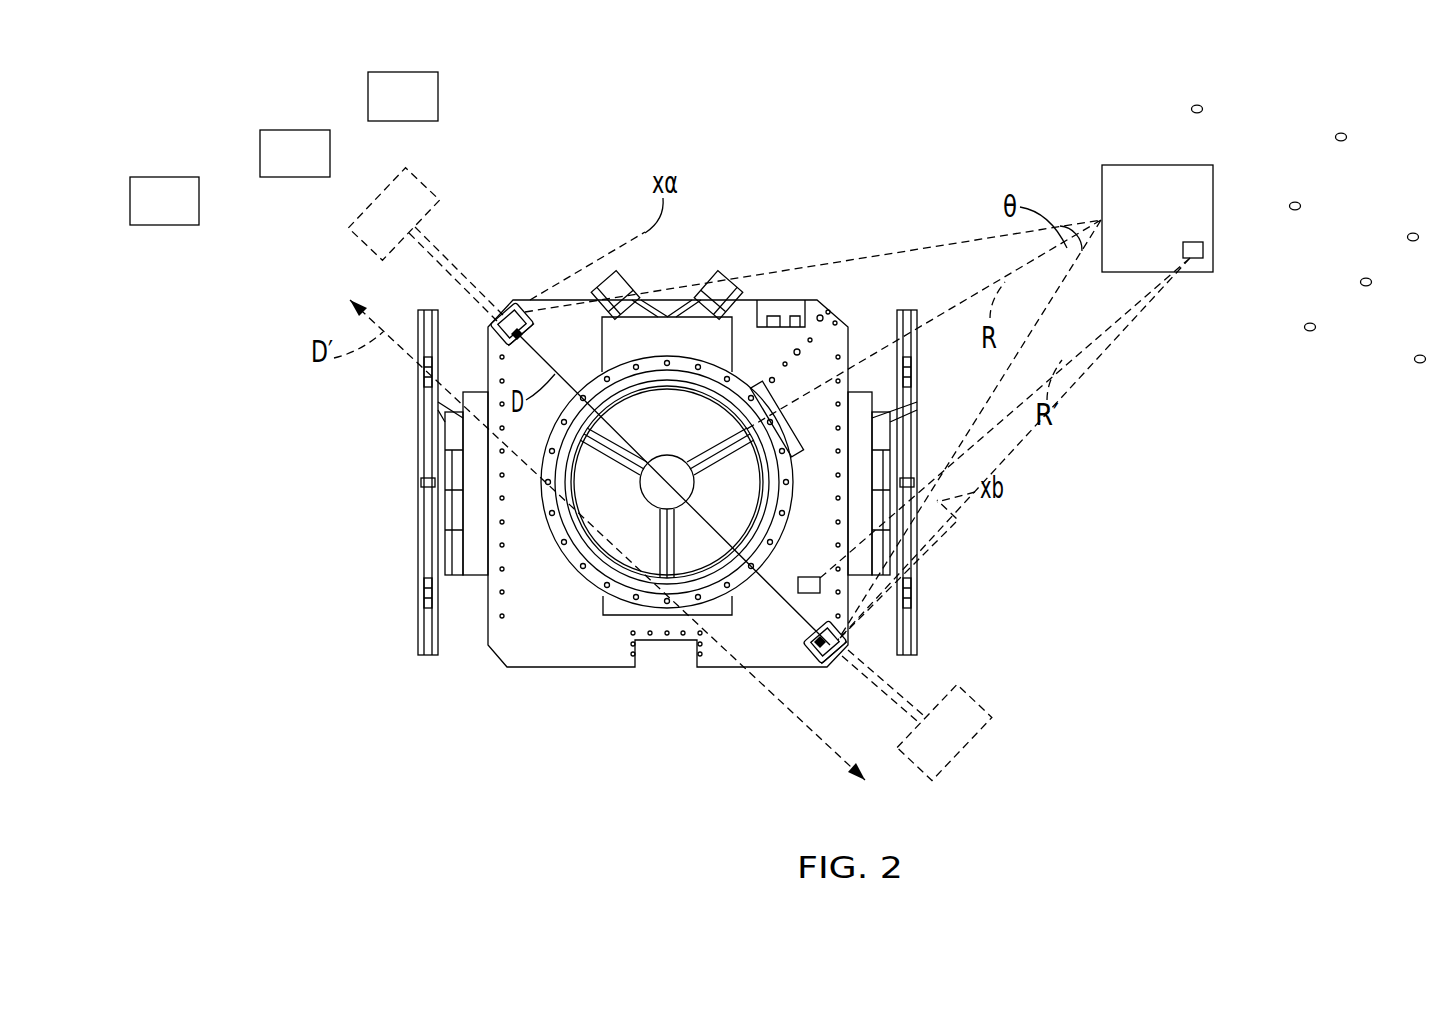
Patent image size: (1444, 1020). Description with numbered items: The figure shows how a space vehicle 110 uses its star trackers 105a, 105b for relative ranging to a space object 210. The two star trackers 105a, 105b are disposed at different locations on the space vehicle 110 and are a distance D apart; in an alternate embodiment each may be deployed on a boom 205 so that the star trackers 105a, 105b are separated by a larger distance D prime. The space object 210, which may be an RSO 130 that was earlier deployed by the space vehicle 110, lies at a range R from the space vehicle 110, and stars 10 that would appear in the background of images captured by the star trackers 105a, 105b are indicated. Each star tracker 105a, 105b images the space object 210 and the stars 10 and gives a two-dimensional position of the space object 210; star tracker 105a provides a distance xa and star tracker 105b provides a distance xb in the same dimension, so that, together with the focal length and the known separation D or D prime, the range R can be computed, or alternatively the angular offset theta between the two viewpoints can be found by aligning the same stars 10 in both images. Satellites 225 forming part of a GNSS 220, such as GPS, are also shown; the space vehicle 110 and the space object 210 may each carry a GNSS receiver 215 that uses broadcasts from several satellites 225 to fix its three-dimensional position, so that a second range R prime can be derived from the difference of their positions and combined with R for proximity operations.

The stars 10 is at (1308, 331).
The star tracker 105a is at (358, 243).
The star tracker 105b is at (842, 640).
The space vehicle 110 is at (813, 300).
The RSO 130 is at (1157, 181).
The space object 210 is at (1150, 165).
The boom 205 is at (448, 257).
The GNSS receiver 215 is at (1192, 259).
The GNSS 220 is at (140, 160).
The satellites 225 is at (160, 226).